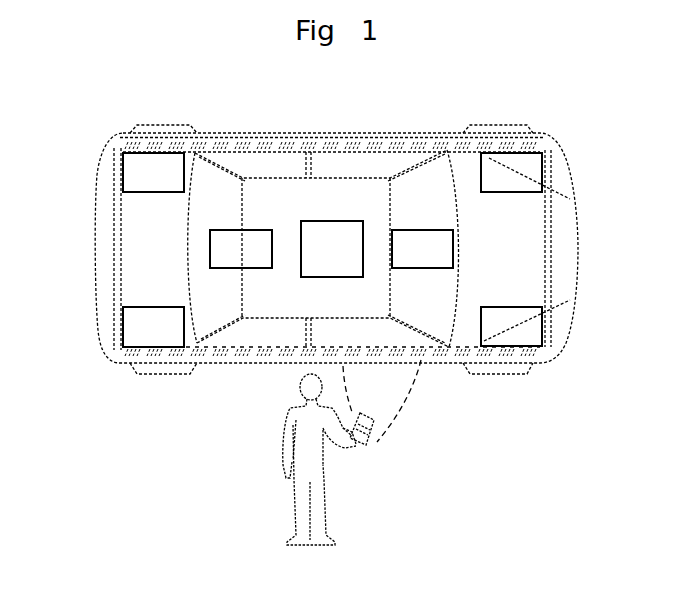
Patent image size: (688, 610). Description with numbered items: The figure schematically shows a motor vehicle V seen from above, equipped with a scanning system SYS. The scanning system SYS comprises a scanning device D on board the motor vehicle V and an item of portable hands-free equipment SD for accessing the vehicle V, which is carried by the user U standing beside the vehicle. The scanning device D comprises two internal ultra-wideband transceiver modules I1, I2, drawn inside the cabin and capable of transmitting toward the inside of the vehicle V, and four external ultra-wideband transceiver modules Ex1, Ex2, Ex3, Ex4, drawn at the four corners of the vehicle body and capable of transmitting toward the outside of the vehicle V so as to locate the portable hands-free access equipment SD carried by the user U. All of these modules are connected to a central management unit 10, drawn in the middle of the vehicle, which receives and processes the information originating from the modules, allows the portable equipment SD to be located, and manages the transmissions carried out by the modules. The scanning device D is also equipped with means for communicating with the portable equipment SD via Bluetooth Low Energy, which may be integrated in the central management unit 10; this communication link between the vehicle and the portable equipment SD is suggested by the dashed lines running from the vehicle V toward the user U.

The motor vehicle V is at (210, 110).
The central management unit 10 is at (330, 233).
The external ultra-wideband transceiver module Ex1 is at (133, 332).
The external ultra-wideband transceiver module Ex2 is at (532, 331).
The external ultra-wideband transceiver module Ex3 is at (530, 166).
The external ultra-wideband transceiver module Ex4 is at (132, 166).
The internal ultra-wideband transceiver module I1 is at (237, 250).
The internal ultra-wideband transceiver module I2 is at (428, 250).
The user U is at (262, 455).
The portable hands-free equipment SD is at (363, 432).
The scanning device D is at (413, 355).
The scanning system SYS is at (398, 415).